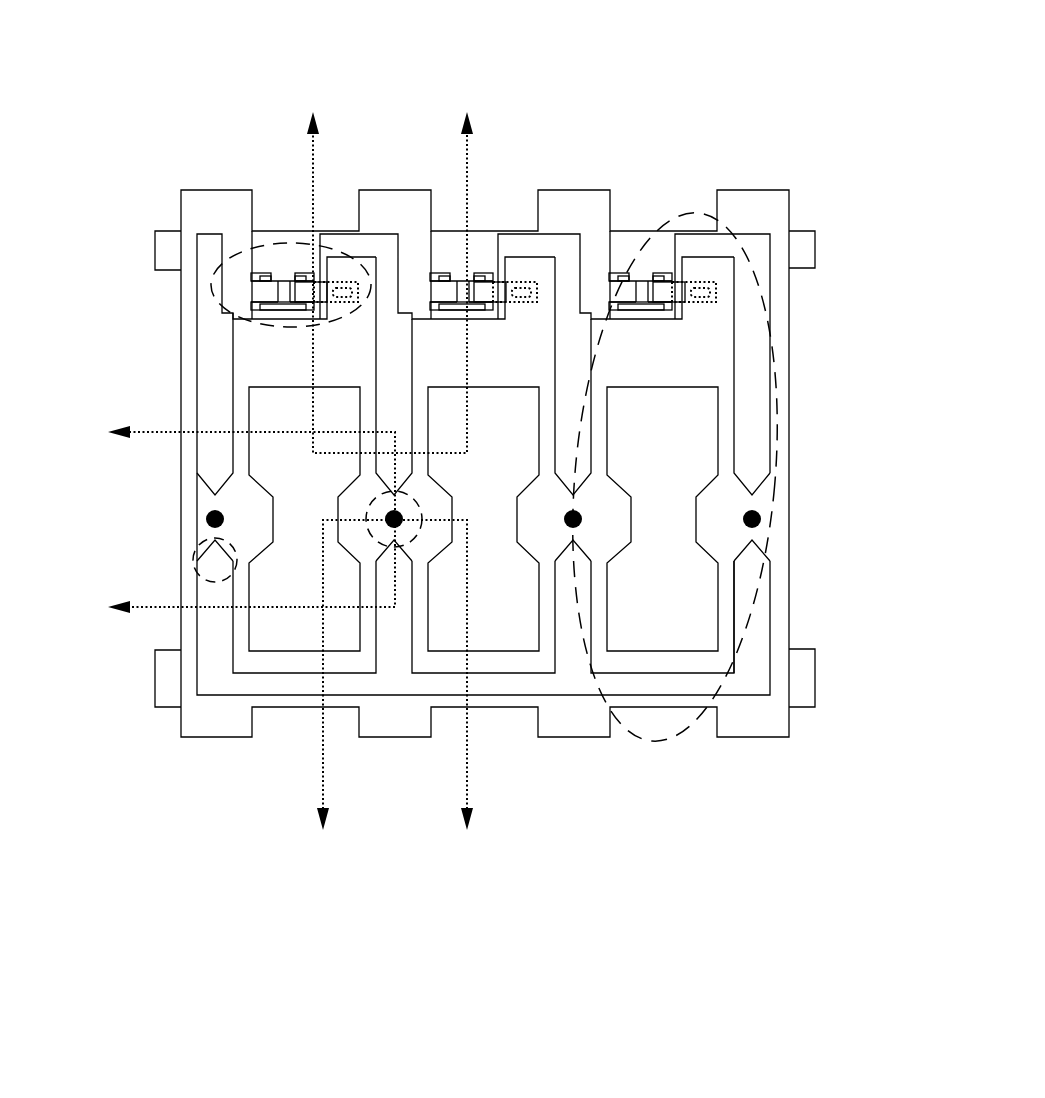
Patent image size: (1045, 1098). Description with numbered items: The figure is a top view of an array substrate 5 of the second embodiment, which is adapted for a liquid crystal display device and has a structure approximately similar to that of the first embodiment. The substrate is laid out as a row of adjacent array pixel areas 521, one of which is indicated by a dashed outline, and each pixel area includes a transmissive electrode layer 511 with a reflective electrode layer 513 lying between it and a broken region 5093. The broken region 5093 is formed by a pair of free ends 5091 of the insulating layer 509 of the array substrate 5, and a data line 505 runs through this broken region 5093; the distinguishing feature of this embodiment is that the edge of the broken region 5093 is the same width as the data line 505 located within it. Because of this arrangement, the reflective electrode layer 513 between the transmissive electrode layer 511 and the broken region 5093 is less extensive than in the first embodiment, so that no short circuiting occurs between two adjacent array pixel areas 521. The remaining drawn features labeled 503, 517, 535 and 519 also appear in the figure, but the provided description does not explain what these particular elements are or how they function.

The array substrate 5 is at (620, 68).
The data line 505 is at (753, 220).
The connection pad 503 is at (808, 240).
The thin film transistor 517 is at (299, 245).
The reflective electrode layer 513 is at (275, 358).
The transmissive electrode layer 511 is at (277, 417).
The insulating layer 509 is at (335, 682).
The free ends 5091 is at (210, 556).
The broken region 5093 is at (415, 540).
The contact region 535 is at (772, 503).
The contact hole 519 is at (756, 527).
The array pixel areas 521 is at (680, 735).